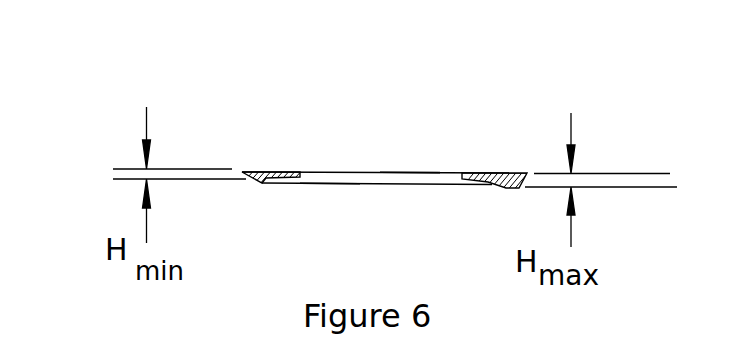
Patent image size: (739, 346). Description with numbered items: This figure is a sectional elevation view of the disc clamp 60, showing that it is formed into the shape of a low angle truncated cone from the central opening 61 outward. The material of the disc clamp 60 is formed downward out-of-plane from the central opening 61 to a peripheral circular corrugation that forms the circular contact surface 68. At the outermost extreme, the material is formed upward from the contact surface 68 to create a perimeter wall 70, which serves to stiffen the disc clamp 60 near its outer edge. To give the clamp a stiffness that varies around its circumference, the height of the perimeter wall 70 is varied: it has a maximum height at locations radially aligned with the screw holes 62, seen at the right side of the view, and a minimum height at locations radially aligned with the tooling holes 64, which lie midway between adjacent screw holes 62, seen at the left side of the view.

The disc clamp 60 is at (428, 114).
The central opening 61 is at (383, 172).
The screw holes 62 is at (488, 176).
The tooling holes 64 is at (279, 176).
The contact surface 68 is at (327, 184).
The perimeter wall 70 is at (395, 160).